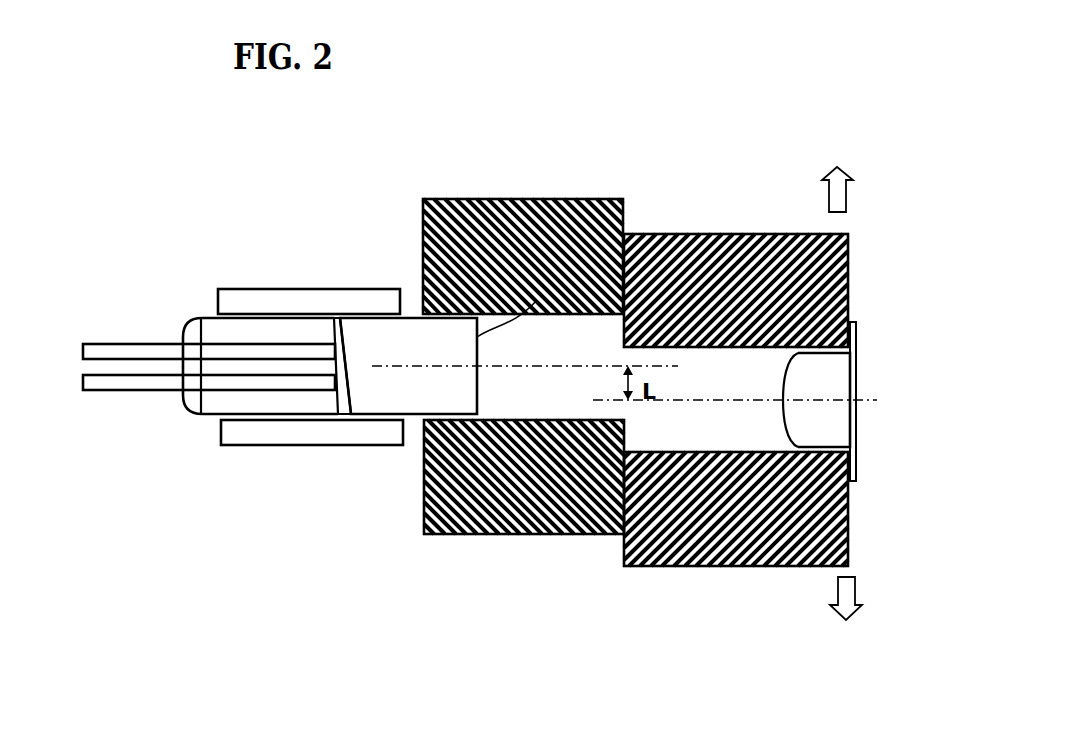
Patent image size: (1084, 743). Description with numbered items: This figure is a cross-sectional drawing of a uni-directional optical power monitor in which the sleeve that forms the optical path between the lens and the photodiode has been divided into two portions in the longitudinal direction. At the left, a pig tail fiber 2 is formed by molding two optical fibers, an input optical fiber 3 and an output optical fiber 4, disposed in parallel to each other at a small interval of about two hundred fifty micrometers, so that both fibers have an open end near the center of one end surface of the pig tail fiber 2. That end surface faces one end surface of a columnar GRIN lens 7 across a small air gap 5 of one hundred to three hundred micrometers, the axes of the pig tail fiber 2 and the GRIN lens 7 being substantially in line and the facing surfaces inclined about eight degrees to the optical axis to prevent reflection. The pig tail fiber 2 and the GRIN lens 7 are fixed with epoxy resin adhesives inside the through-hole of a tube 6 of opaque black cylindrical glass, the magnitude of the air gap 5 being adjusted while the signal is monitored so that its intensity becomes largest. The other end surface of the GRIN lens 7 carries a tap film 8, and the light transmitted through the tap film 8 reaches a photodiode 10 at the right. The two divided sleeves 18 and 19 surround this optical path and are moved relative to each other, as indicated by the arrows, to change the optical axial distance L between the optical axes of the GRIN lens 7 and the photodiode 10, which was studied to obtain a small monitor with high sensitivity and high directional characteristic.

The pig tail fiber 2 is at (273, 405).
The input optical fiber 3 is at (162, 350).
The output optical fiber 4 is at (147, 390).
The air gap 5 is at (337, 332).
The tube 6 is at (303, 435).
The columnar GRIN lens 7 is at (430, 385).
The tap film 8 is at (488, 252).
The photodiode 10 is at (808, 435).
The divided sleeve 18 is at (740, 537).
The divided sleeve 19 is at (498, 520).